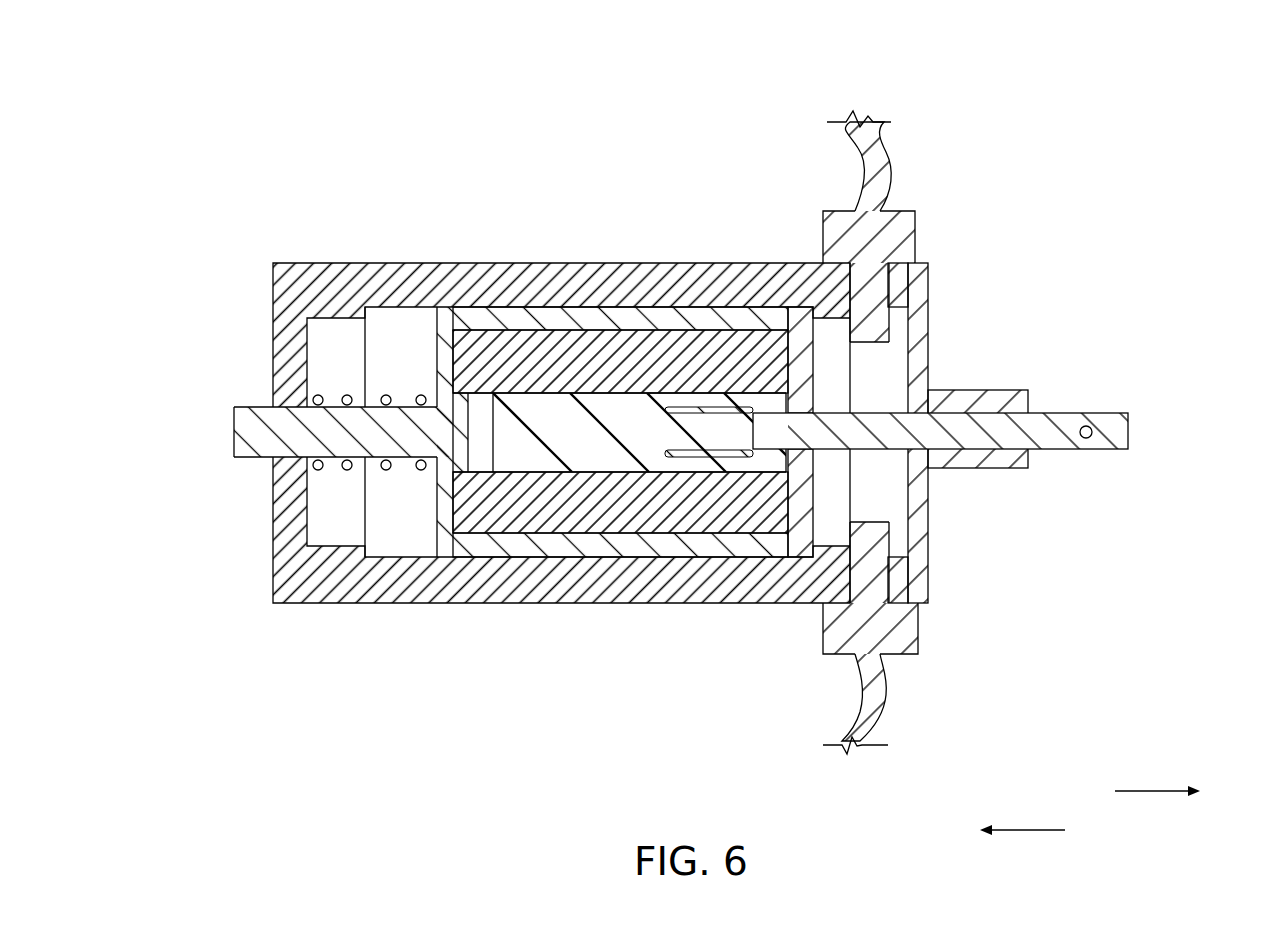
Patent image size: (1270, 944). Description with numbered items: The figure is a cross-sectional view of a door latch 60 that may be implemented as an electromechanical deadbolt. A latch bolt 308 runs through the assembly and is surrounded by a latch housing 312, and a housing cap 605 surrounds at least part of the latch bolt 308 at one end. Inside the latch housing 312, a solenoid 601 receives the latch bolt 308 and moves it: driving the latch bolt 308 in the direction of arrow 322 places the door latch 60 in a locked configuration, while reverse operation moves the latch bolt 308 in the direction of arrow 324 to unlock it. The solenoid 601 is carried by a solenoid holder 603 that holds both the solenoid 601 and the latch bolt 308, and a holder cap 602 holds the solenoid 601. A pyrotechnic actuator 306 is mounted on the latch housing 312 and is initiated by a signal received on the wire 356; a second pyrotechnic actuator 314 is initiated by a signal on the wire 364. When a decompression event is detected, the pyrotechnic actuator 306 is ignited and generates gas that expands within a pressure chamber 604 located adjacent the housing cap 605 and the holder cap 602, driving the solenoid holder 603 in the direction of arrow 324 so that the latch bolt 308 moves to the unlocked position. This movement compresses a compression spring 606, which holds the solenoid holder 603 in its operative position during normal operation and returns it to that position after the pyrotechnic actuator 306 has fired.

The door latch 60 is at (735, 123).
The pyrotechnic actuator 306 is at (905, 232).
The latch bolt 308 is at (1108, 430).
The latch housing 312 is at (596, 263).
The pyrotechnic actuator 314 is at (898, 633).
The arrow 322 is at (1138, 791).
The arrow 324 is at (1044, 830).
The wire 356 is at (880, 176).
The wire 364 is at (872, 717).
The solenoid 601 is at (648, 505).
The holder cap 602 is at (752, 507).
The solenoid holder 603 is at (578, 548).
The pressure chamber 604 is at (888, 486).
The housing cap 605 is at (926, 326).
The compression spring 606 is at (383, 395).